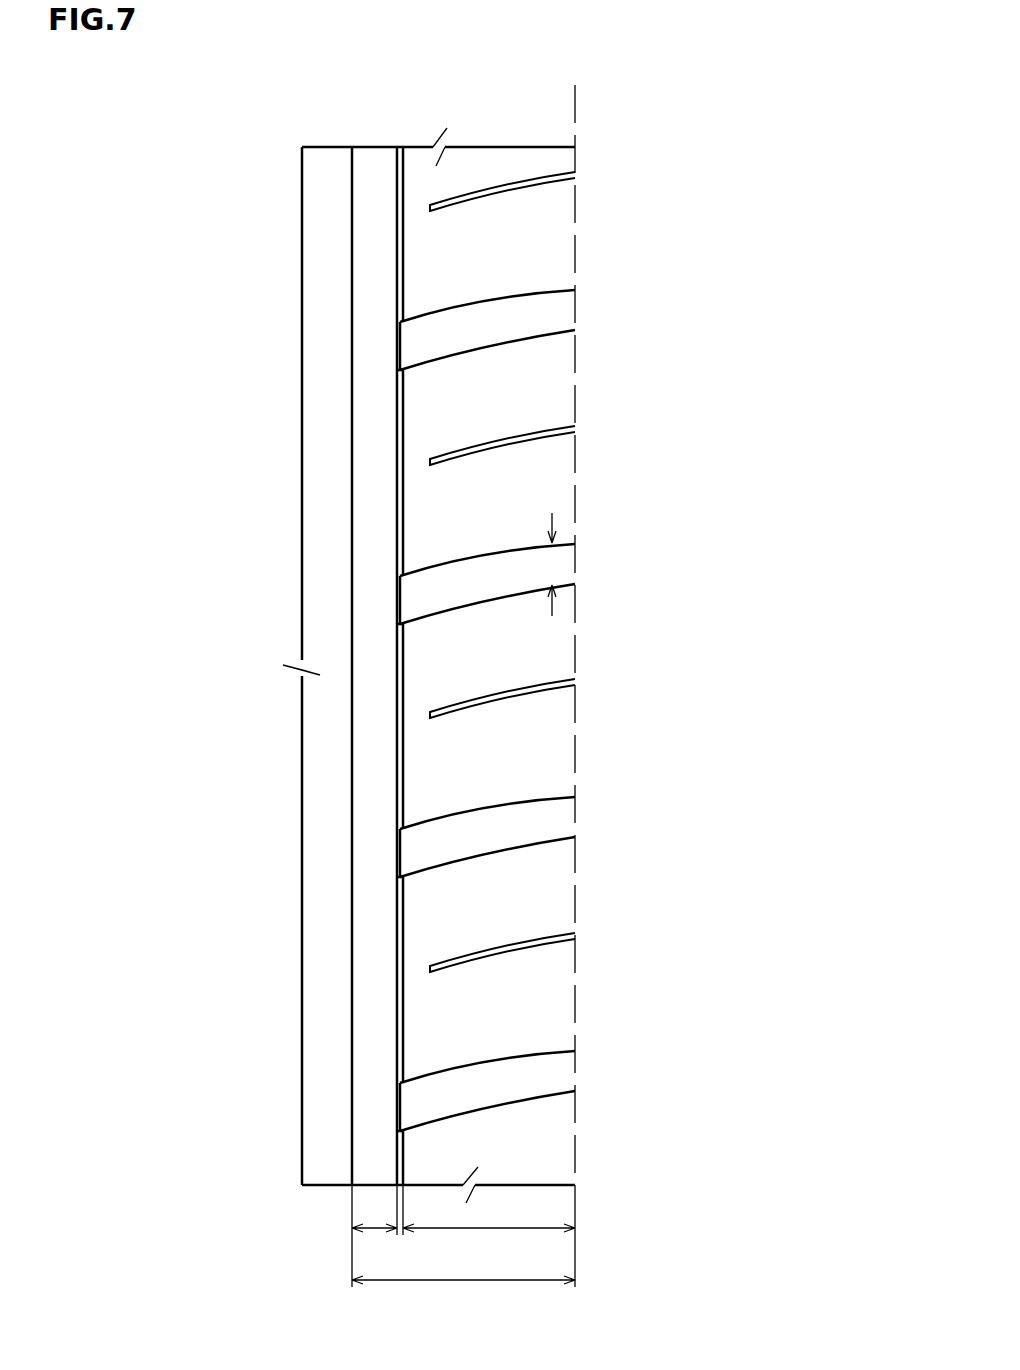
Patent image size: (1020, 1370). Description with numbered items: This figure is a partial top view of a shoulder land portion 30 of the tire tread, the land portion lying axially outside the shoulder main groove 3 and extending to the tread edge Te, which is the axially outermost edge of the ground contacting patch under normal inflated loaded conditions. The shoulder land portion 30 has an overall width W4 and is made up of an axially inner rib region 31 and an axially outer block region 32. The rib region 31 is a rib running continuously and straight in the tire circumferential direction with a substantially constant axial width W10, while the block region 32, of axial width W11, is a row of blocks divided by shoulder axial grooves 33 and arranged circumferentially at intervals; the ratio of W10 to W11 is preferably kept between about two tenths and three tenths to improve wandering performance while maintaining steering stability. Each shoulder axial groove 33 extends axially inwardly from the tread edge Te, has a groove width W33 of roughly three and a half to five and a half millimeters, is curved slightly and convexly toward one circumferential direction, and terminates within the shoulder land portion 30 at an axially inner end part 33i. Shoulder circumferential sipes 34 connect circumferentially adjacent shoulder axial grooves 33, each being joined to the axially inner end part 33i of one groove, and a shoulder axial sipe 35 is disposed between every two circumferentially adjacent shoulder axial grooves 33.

The shoulder main groove 3 is at (330, 176).
The shoulder land portion 30 is at (520, 72).
The rib region 31 is at (380, 174).
The block region 32 is at (490, 220).
The shoulder axial groove 33 is at (500, 327).
The axially inner end part of shoulder axial groove 33i is at (398, 603).
The shoulder circumferential sipe 34 is at (398, 238).
The shoulder axial sipe 35 is at (527, 188).
The tread edge Te is at (578, 622).
The groove width of shoulder axial groove W33 is at (553, 566).
The axial width of rib region W10 is at (379, 1236).
The axial width of block region W11 is at (489, 1245).
The width of shoulder land portion W4 is at (463, 1297).